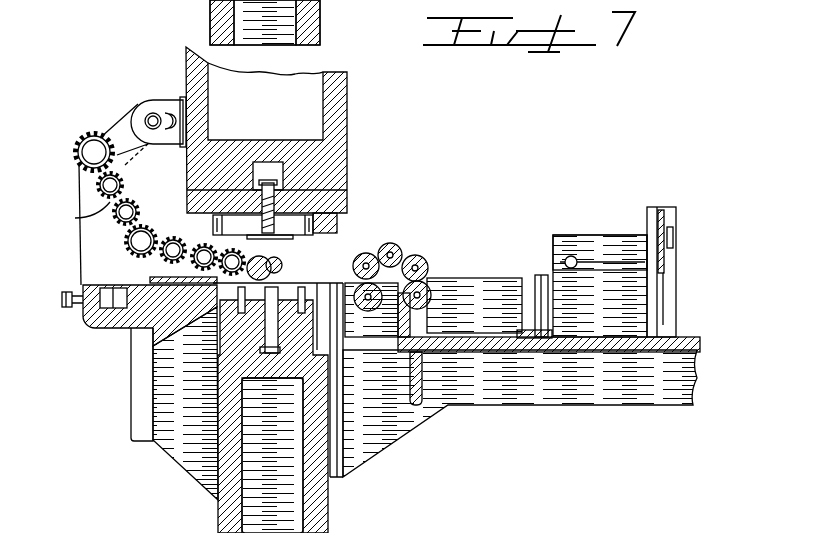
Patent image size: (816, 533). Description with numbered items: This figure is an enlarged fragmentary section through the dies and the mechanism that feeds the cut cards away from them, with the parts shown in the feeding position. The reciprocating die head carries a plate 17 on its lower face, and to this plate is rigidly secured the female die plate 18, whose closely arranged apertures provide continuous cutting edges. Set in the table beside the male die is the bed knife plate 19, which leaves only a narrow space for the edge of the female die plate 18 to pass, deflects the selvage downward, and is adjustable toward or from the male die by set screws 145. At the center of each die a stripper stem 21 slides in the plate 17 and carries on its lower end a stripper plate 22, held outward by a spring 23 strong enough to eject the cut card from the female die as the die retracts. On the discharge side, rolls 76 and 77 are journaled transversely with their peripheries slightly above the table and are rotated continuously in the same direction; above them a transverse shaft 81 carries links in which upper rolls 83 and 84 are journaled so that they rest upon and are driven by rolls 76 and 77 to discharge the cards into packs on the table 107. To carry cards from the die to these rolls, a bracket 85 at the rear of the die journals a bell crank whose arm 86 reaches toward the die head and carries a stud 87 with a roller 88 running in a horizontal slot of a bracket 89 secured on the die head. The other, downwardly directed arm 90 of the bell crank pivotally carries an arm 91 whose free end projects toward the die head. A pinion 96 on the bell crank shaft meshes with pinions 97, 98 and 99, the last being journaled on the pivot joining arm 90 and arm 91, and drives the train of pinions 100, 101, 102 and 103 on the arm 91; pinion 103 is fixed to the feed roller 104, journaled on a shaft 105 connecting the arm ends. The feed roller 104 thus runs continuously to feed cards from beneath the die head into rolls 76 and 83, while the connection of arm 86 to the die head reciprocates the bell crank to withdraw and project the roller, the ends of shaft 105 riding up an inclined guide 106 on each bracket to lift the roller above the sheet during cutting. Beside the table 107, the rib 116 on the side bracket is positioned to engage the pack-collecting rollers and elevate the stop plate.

The plate 17 is at (349, 196).
The female die plate 18 is at (338, 224).
The bed knife plate 19 is at (150, 281).
The stripper stem 21 is at (277, 200).
The stripper plate 22 is at (263, 236).
The spring 23 is at (280, 217).
The roll 76 is at (358, 290).
The roll 77 is at (432, 283).
The transverse shaft 81 is at (394, 245).
The roll 83 is at (366, 256).
The roll 84 is at (417, 257).
The bracket 85 is at (90, 193).
The bell crank arm 86 is at (118, 128).
The stud 87 is at (153, 112).
The roller 88 is at (164, 112).
The bracket 89 is at (146, 100).
The bell crank arm 90 is at (81, 215).
The arm 91 is at (243, 276).
The pinion 96 is at (84, 139).
The pinion 97 is at (123, 177).
The pinion 98 is at (132, 204).
The pinion 99 is at (150, 236).
The pinion 100 is at (202, 243).
The pinion 101 is at (234, 254).
The pinion 102 is at (259, 259).
The pinion 103 is at (283, 249).
The feed roller 104 is at (278, 266).
The shaft 105 is at (215, 310).
The inclined guide 106 is at (135, 256).
The table 107 is at (697, 340).
The rib 116 is at (645, 262).
The set screw 145 is at (68, 308).